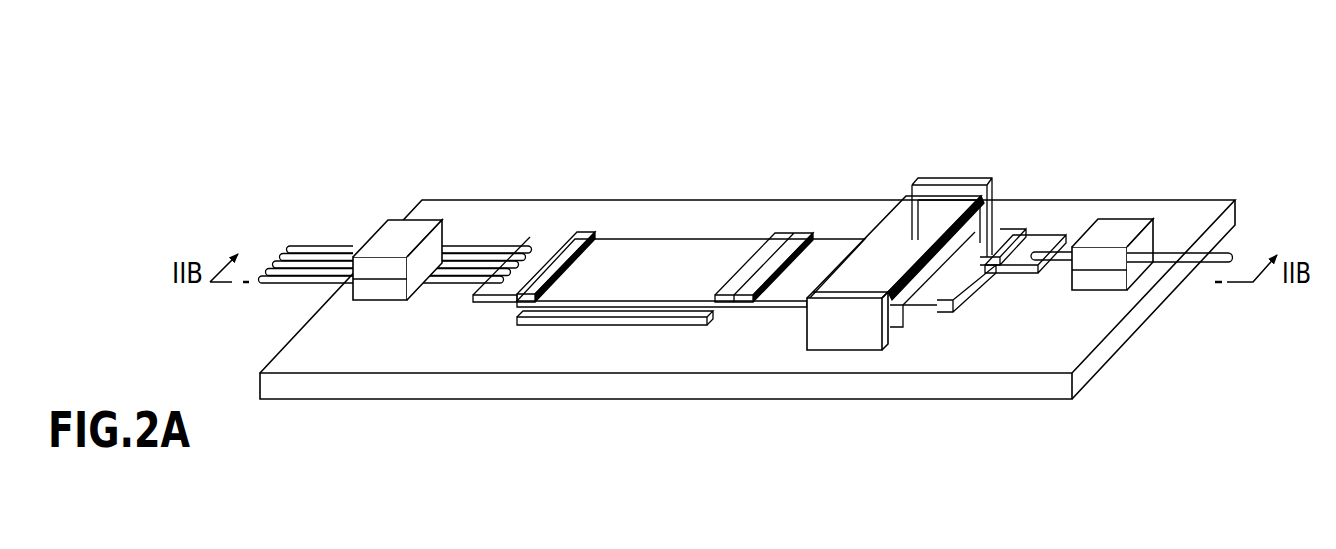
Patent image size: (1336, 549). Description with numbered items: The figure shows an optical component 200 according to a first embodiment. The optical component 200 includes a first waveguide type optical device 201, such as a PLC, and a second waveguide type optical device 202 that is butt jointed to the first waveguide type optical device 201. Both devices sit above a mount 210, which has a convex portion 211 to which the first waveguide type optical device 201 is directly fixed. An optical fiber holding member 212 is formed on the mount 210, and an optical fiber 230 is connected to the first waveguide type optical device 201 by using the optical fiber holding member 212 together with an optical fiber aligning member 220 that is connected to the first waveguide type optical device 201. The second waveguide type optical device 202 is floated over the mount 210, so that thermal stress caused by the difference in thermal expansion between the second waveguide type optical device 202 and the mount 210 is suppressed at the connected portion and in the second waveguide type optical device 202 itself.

The optical component 200 is at (1078, 160).
The first waveguide type optical device 201 is at (662, 245).
The second waveguide type optical device 202 is at (833, 245).
The mount 210 is at (823, 390).
The convex portion 211 is at (610, 326).
The optical fiber holding member 212 is at (393, 227).
The optical fiber aligning member 220 is at (493, 300).
The optical fiber 230 is at (478, 232).